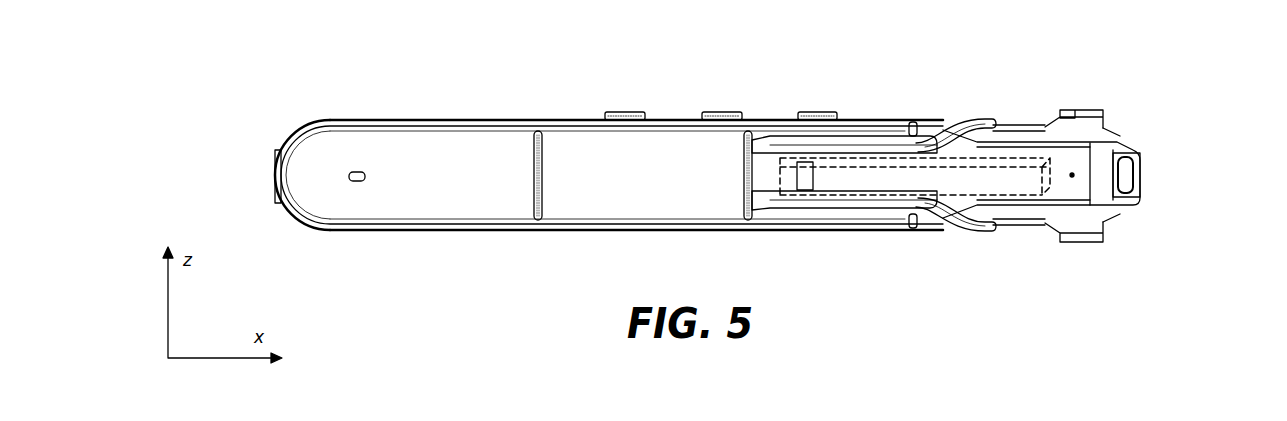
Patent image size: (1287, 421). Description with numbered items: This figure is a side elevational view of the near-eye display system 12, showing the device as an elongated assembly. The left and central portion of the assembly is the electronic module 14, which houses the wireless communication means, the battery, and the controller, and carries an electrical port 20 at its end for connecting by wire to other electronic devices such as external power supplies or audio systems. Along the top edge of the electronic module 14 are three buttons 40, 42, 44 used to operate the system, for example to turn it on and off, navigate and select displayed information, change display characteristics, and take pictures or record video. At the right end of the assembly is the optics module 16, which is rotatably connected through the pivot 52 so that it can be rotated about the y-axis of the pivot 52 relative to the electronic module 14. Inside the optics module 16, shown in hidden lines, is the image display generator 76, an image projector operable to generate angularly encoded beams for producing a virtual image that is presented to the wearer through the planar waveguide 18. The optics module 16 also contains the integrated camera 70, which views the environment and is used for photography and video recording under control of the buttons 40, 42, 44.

The near-eye display system 12 is at (408, 294).
The electronic module 14 is at (305, 126).
The optics module 16 is at (1128, 238).
The planar waveguide 18 is at (1082, 110).
The electrical port 20 is at (277, 183).
The button 40 is at (628, 112).
The button 42 is at (723, 112).
The button 44 is at (818, 112).
The pivot 52 is at (970, 121).
The integrated camera 70 is at (1122, 185).
The image display generator 76 is at (1030, 198).